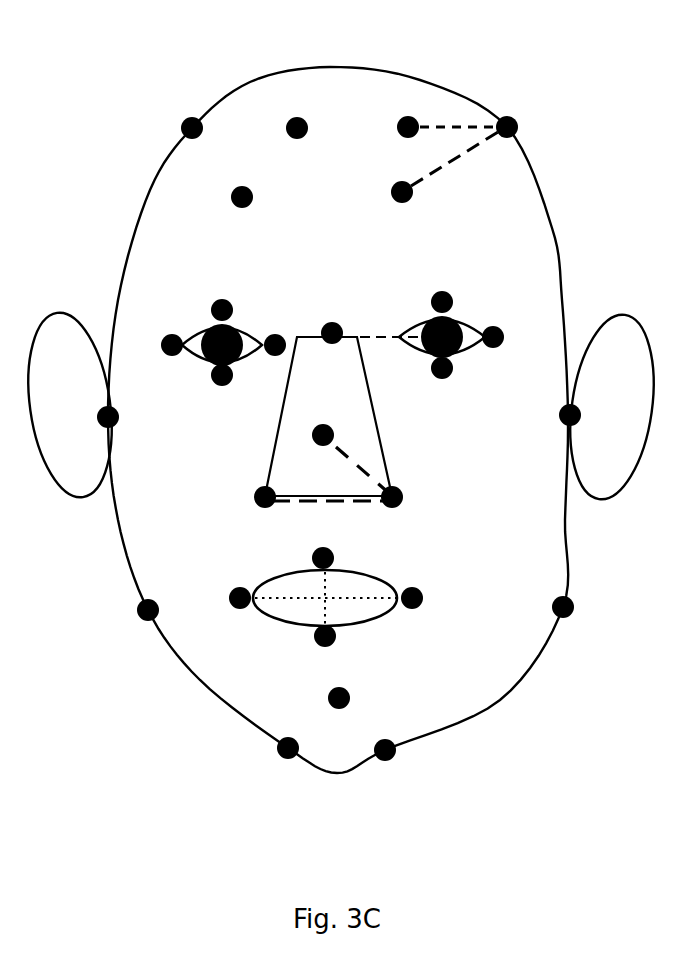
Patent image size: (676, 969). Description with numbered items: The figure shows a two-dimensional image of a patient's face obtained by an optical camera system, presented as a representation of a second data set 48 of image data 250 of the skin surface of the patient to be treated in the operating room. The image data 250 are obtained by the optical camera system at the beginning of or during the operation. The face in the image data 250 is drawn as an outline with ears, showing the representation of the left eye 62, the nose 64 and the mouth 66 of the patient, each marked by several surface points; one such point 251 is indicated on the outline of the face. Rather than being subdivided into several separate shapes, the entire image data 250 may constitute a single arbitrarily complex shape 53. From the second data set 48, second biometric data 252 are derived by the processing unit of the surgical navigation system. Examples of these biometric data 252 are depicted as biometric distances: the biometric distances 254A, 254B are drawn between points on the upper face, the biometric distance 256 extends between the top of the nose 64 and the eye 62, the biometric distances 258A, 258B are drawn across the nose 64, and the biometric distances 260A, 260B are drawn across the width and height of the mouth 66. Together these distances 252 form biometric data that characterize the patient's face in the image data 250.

The second data set 48 is at (578, 88).
The single arbitrarily complex shape 53 is at (222, 272).
The left eye 62 is at (470, 355).
The nose 64 is at (282, 430).
The mouth 66 is at (255, 608).
The image data 250 is at (552, 228).
The facial landmark point 251 is at (186, 120).
The second biometric data 252 is at (380, 306).
The biometric distance 254A is at (438, 113).
The biometric distance 254B is at (418, 182).
The biometric distance 256 is at (385, 333).
The biometric distance 258A is at (342, 448).
The biometric distance 258B is at (375, 505).
The biometric distance 260A is at (393, 610).
The biometric distance 260B is at (290, 596).